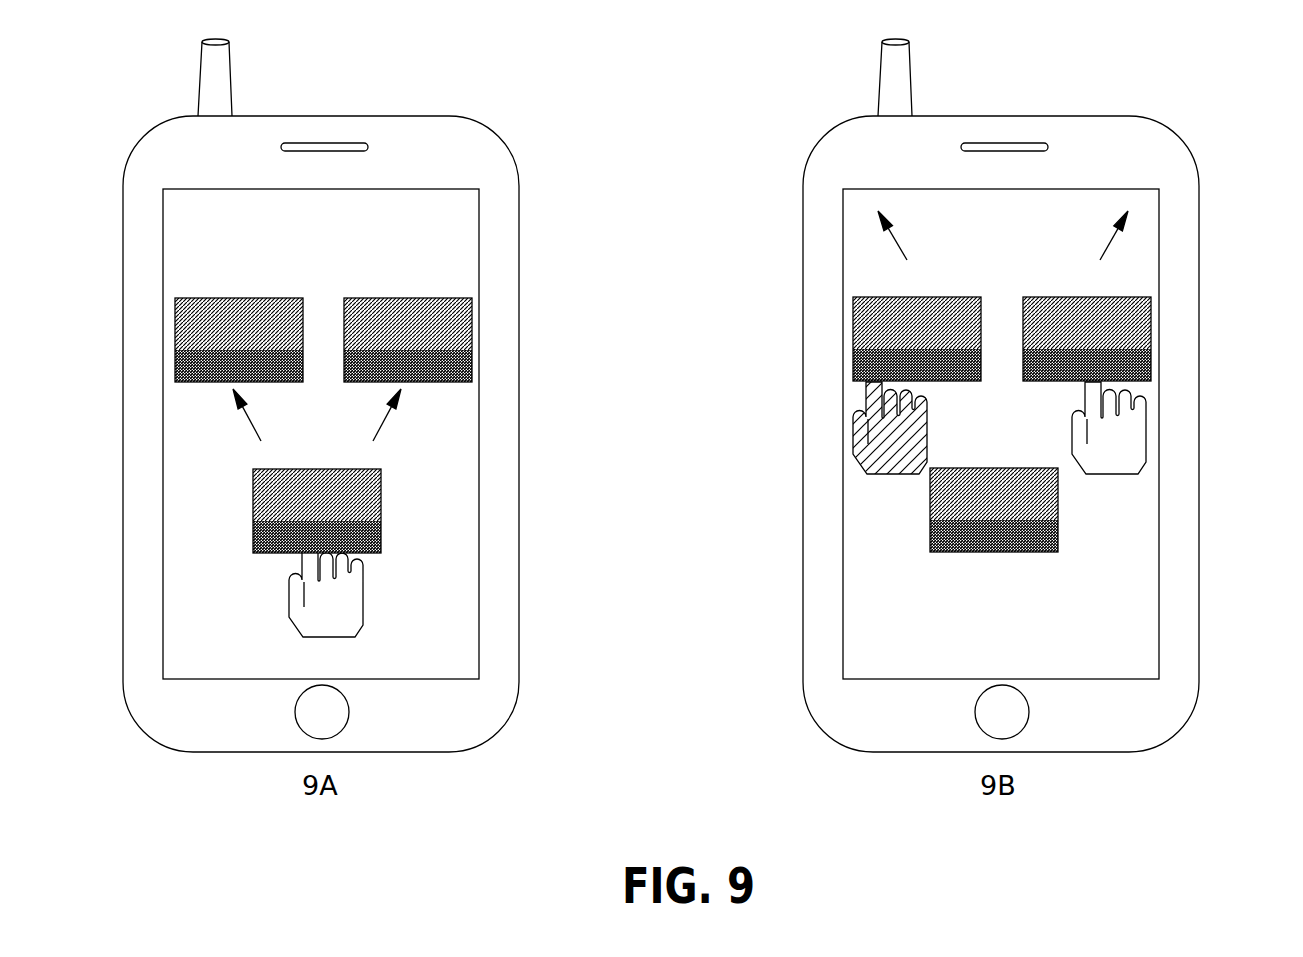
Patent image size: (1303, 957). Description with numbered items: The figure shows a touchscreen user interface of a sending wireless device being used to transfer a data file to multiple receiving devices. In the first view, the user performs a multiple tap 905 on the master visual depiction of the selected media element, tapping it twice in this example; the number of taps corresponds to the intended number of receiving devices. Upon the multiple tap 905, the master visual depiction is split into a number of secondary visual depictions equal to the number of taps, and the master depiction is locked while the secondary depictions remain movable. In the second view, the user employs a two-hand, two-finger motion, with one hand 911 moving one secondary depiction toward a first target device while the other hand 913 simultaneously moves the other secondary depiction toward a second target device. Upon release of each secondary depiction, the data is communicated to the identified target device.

The multiple tap 905 is at (363, 596).
The first touch input hand 911 is at (926, 446).
The second touch input hand 913 is at (1072, 411).